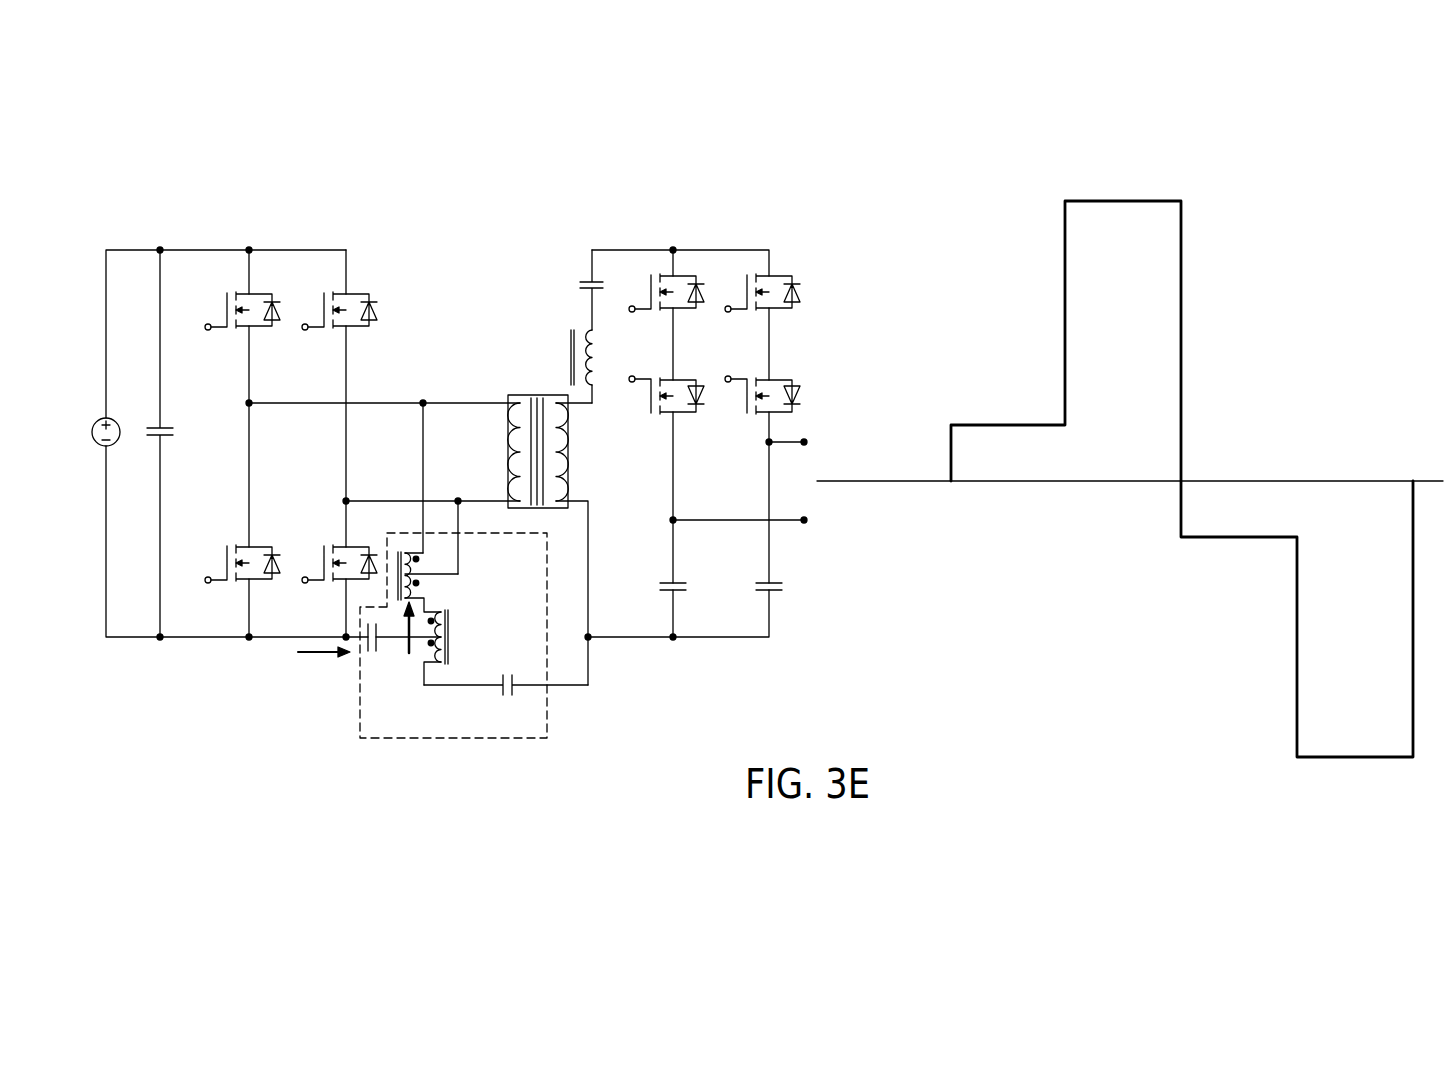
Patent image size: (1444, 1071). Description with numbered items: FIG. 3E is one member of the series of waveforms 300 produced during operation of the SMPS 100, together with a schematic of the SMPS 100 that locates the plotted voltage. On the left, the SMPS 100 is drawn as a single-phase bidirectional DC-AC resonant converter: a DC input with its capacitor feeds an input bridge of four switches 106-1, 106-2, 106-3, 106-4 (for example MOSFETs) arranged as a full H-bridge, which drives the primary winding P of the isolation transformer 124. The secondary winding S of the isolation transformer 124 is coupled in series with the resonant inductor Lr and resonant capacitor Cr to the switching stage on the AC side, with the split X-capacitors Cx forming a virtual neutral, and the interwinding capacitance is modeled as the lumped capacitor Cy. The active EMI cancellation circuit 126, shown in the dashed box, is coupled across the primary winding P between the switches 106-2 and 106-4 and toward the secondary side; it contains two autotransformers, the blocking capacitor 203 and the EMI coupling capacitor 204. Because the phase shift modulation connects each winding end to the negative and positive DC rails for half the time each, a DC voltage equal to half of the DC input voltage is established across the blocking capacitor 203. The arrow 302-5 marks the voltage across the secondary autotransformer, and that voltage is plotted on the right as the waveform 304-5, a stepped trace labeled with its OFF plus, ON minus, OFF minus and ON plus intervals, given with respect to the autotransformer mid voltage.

The SMPS 100 is at (266, 186).
The switch 106-1 is at (236, 328).
The switch 106-2 is at (236, 581).
The switch 106-3 is at (333, 328).
The switch 106-4 is at (333, 581).
The isolation transformer 124 is at (533, 378).
The active EMI cancellation circuit 126 is at (405, 757).
The blocking capacitor 203 is at (381, 646).
The EMI coupling capacitor 204 is at (498, 697).
The arrow 302-5 is at (414, 630).
The waveform 304-5 is at (985, 235).
The series of waveforms 300 is at (1360, 101).